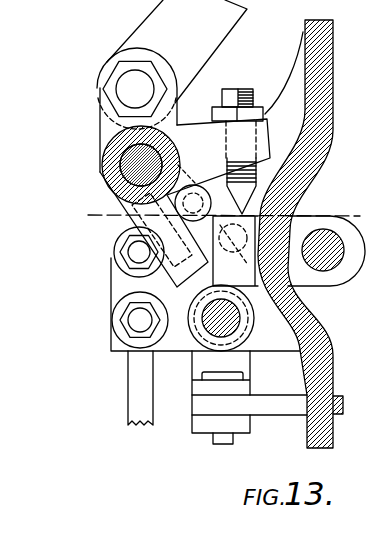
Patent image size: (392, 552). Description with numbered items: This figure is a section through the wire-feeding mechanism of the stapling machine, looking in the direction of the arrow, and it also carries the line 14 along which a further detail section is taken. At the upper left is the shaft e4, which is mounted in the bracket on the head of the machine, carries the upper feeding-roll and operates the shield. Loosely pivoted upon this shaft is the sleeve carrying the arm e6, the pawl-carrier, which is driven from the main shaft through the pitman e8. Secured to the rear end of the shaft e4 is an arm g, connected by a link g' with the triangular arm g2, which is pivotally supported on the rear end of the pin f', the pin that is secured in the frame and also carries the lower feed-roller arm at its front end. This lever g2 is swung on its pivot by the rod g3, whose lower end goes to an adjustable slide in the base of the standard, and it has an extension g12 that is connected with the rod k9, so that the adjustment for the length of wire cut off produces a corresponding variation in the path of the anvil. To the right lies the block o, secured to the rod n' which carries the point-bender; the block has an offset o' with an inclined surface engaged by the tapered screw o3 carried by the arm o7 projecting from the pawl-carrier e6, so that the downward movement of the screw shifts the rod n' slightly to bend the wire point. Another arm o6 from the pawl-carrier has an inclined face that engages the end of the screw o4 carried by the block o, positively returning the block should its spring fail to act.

The section line 14 is at (222, 216).
The screw o3 is at (268, 203).
The pitman e8 is at (172, 86).
The arm e6 is at (105, 72).
The shaft e4 is at (100, 170).
The arm g is at (185, 203).
The arm o6 is at (163, 240).
The arm o7 is at (268, 130).
The block o is at (332, 251).
The screw o4 is at (317, 250).
The rod n' is at (284, 265).
The link g' is at (123, 252).
The triangular arm g2 is at (112, 288).
The offset o' is at (213, 318).
The pin f' is at (233, 324).
The rod g3 is at (136, 387).
The extension g12 is at (198, 365).
The rod k9 is at (277, 406).